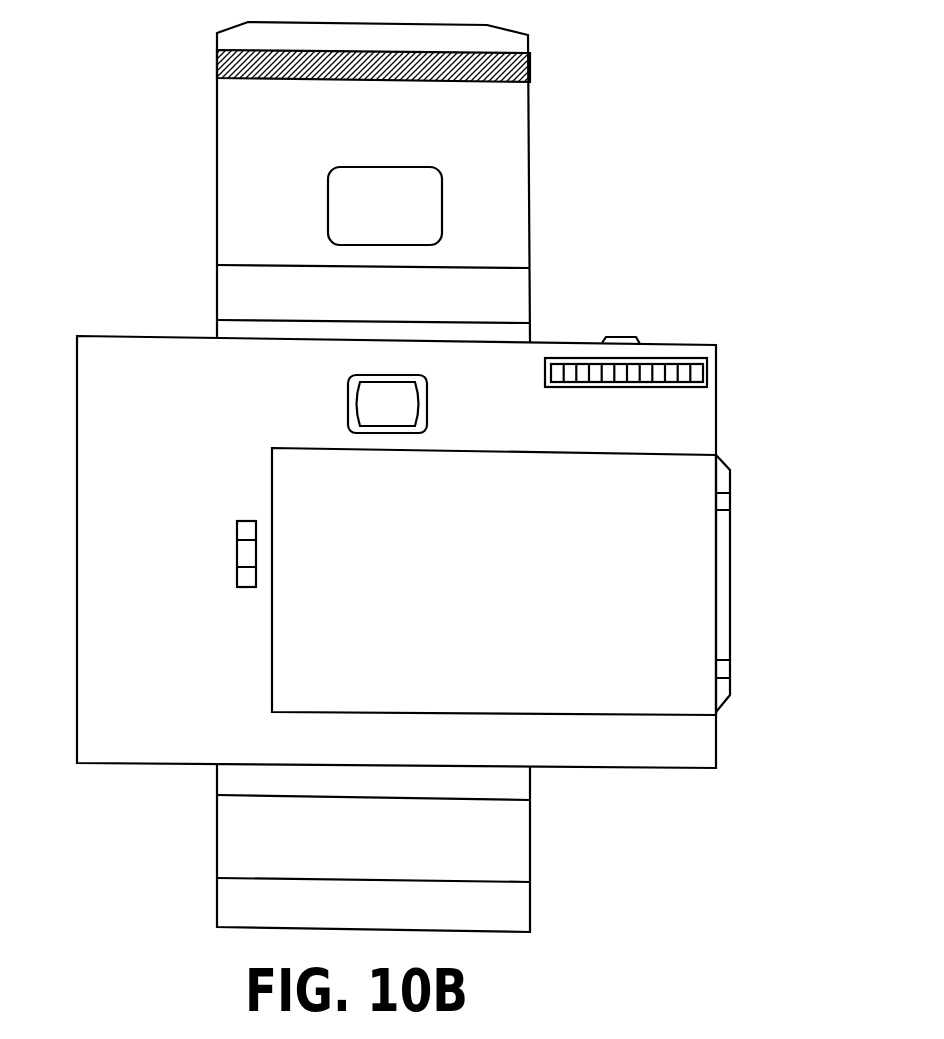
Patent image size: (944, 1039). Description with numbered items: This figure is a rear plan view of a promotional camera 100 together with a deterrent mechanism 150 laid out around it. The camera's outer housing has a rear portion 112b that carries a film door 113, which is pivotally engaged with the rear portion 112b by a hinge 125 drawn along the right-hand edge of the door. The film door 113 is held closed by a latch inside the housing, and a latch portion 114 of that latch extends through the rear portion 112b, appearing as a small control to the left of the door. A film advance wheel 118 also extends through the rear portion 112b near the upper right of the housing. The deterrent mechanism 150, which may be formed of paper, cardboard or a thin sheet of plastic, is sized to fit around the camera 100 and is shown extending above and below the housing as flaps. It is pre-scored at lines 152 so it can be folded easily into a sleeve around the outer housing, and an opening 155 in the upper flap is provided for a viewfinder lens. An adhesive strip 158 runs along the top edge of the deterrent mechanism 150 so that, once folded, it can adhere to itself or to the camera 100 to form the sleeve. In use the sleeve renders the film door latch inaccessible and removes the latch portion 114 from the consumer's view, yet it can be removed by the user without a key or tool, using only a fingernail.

The promotional camera 100 is at (77, 412).
The rear portion 112b is at (212, 441).
The film door 113 is at (534, 576).
The latch portion 114 is at (237, 562).
The film advance wheel 118 is at (716, 370).
The hinge 125 is at (730, 592).
The deterrent mechanism 150 is at (530, 172).
The pre-scored lines 152 is at (238, 268).
The opening 155 is at (437, 180).
The adhesive strip 158 is at (533, 80).